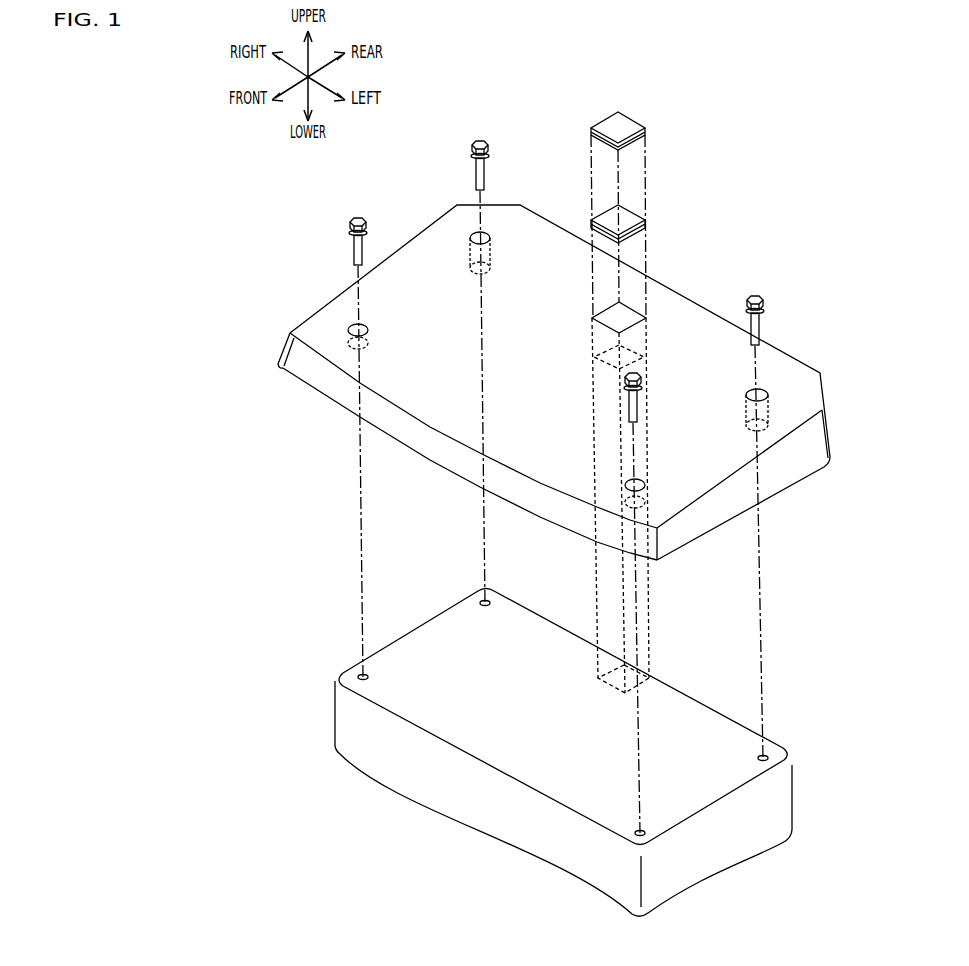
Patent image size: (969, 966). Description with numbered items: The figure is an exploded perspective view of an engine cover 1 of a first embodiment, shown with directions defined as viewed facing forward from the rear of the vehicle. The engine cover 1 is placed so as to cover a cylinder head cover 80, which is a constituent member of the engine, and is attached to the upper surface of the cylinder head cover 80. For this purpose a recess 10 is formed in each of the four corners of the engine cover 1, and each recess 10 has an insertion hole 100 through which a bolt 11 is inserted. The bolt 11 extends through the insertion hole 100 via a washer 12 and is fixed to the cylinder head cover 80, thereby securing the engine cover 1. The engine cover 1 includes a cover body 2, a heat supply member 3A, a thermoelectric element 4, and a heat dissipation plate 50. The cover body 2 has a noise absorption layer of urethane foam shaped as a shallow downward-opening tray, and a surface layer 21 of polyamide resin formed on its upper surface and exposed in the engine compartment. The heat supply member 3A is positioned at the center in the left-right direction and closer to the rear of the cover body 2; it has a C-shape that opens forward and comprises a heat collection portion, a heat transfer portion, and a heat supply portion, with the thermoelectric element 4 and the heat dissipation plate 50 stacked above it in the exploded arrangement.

The engine cover 1 is at (733, 92).
The cover body 2 is at (715, 330).
The heat supply member 3A is at (650, 338).
The thermoelectric element 4 is at (628, 218).
The recess 10 is at (765, 407).
The bolt 11 is at (357, 219).
The washer 12 is at (349, 233).
The surface layer 21 is at (453, 235).
The heat dissipation plate 50 is at (627, 123).
The cylinder head cover 80 is at (463, 625).
The insertion hole 100 is at (765, 427).